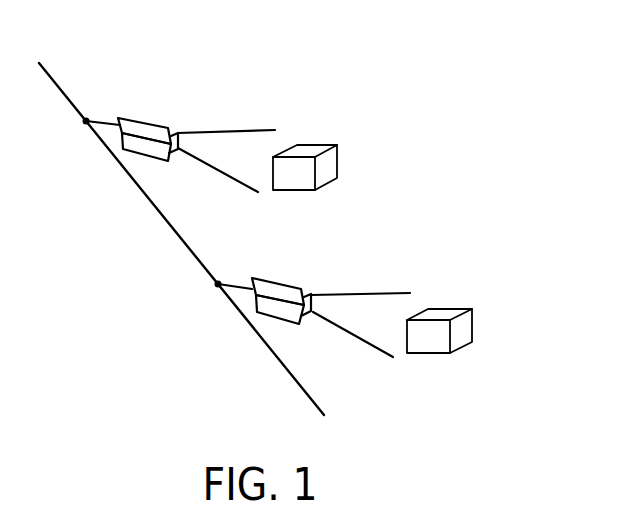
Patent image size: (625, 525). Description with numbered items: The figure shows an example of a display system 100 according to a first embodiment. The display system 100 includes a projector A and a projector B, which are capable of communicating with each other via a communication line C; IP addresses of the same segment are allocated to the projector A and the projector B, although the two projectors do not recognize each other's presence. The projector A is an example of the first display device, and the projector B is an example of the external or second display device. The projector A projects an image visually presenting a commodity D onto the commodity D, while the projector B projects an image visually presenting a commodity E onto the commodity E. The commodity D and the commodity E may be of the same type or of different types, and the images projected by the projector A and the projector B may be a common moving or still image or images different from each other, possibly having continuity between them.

The display system 100 is at (200, 46).
The projector A is at (147, 130).
The projector B is at (278, 291).
The communication line C is at (188, 250).
The commodity D is at (307, 151).
The commodity E is at (442, 314).